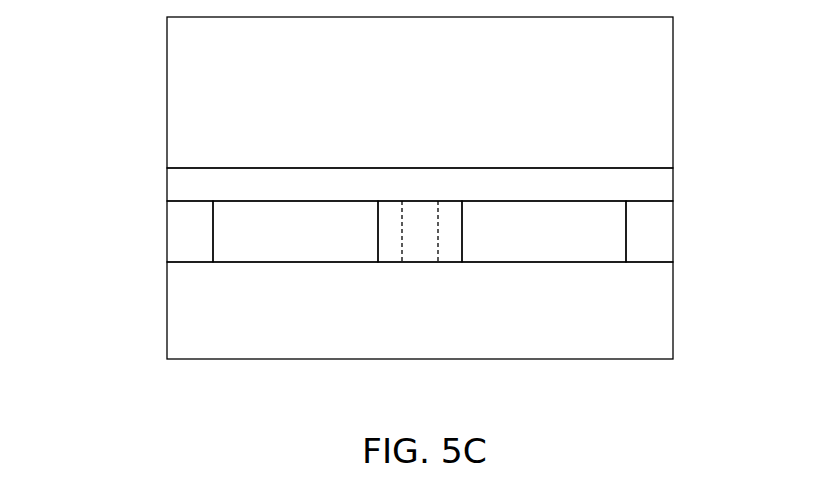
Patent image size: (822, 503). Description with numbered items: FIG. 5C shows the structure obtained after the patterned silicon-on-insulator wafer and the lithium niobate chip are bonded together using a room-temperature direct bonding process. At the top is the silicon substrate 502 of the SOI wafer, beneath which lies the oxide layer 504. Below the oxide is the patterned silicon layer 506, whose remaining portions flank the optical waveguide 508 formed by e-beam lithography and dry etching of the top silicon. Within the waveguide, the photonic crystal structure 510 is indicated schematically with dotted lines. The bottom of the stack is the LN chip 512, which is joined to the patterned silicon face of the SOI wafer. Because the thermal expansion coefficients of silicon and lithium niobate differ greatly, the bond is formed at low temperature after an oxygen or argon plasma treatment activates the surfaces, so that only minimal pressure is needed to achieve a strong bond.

The silicon substrate 502 is at (443, 103).
The oxide layer 504 is at (660, 188).
The silicon layer 506 is at (177, 249).
The optical waveguide 508 is at (378, 232).
The photonic crystal structure 510 is at (438, 233).
The LN chip 512 is at (448, 323).